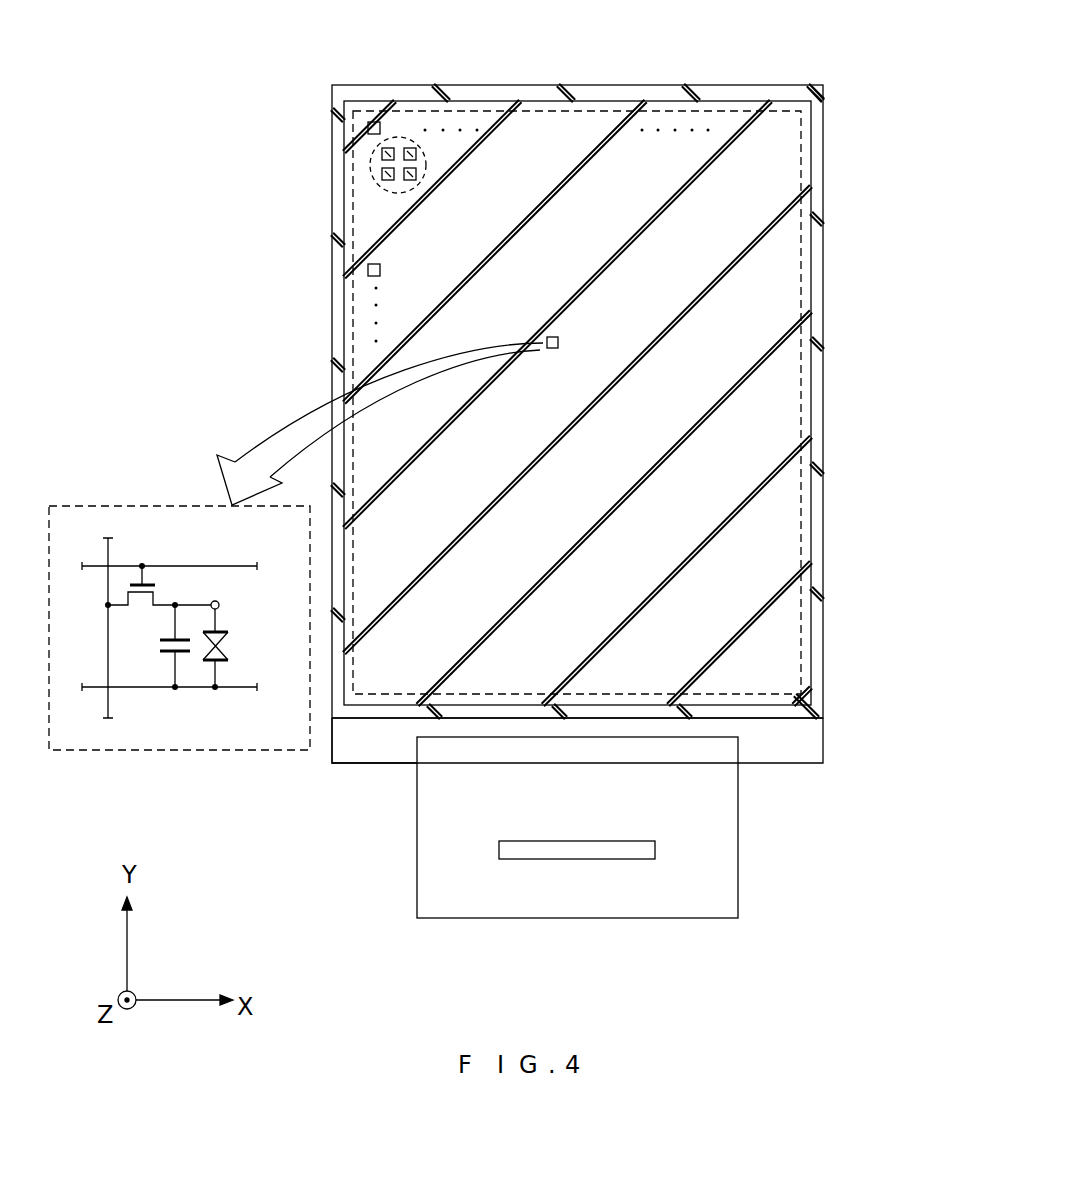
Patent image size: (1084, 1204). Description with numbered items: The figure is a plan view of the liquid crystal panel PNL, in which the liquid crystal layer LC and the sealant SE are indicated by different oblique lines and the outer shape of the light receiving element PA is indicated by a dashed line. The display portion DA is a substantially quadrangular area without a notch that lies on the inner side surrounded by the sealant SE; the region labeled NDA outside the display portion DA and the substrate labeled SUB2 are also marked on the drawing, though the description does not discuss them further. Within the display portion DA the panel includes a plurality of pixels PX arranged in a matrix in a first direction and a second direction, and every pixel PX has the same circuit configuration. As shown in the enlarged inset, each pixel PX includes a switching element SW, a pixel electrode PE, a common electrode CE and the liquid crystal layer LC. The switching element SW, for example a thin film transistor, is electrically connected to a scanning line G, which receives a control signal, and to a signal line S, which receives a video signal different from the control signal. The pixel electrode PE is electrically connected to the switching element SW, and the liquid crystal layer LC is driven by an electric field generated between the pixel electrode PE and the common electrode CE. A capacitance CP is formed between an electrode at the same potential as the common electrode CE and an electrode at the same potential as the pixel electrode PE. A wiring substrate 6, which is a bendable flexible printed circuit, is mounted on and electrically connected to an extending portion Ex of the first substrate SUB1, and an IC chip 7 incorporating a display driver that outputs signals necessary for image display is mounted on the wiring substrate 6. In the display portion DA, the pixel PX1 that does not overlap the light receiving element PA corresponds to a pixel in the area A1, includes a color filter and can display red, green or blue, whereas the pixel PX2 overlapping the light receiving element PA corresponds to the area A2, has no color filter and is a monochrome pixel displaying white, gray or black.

The liquid crystal panel PNL is at (830, 352).
The non-display area NDA is at (812, 282).
The display portion DA is at (575, 37).
The liquid crystal layer LC is at (788, 405).
The sealant SE is at (817, 497).
The second substrate SUB2 is at (815, 638).
The first substrate SUB1 is at (815, 747).
The extending portion Ex is at (353, 750).
The wiring substrate 6 is at (740, 893).
The IC chip 7 is at (657, 850).
The pixel PX is at (374, 121).
The pixel PX1 is at (368, 276).
The pixel PX2 is at (380, 154).
The light receiving element PA is at (394, 194).
The area A1 is at (546, 108).
The area A2 is at (437, 158).
The signal line S is at (105, 637).
The scanning line G is at (97, 566).
The common electrode CE is at (235, 690).
The switching element SW is at (166, 595).
The pixel electrode PE is at (220, 605).
The capacitance CP is at (148, 649).